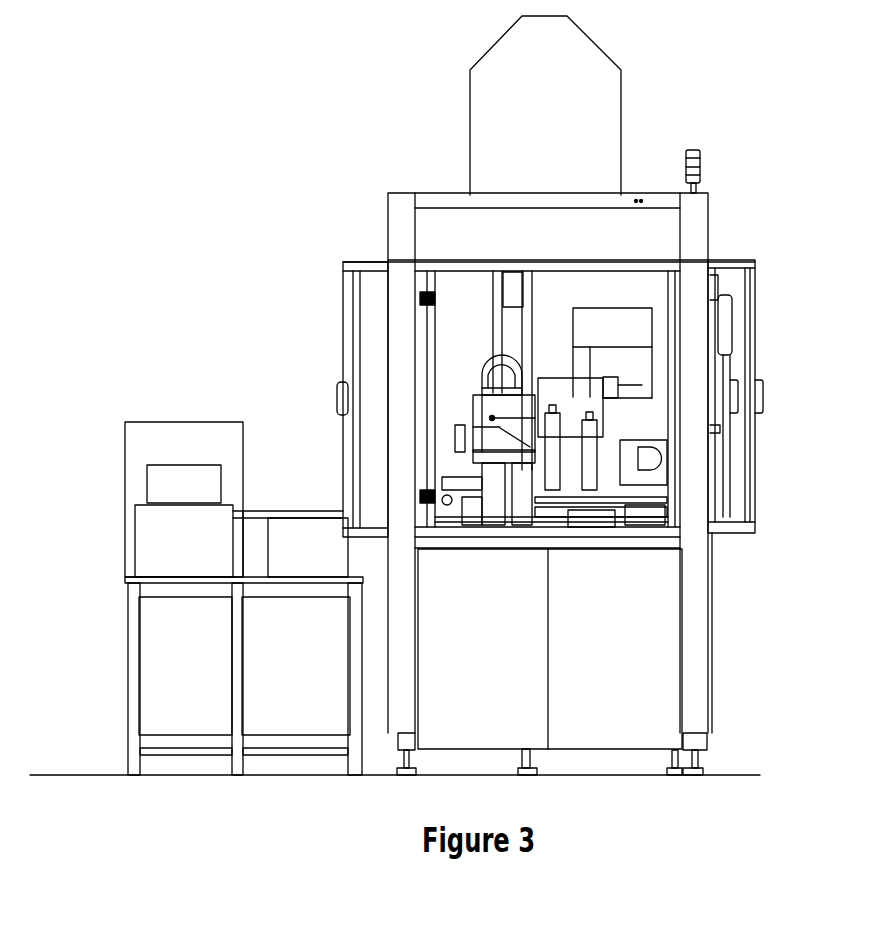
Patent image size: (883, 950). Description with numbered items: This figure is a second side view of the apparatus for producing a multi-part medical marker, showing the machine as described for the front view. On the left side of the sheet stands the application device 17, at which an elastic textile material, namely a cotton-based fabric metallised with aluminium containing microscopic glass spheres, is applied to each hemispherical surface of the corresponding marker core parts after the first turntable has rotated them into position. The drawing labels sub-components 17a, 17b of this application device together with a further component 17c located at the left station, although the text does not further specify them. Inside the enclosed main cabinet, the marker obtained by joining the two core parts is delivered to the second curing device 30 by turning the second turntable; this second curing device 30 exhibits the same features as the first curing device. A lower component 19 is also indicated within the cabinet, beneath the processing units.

The application device 17 is at (163, 356).
The conveyor 17a is at (296, 460).
The conveyor 17b is at (313, 515).
The container 17c is at (185, 545).
The machine base table 19 is at (606, 497).
The second curing device 30 is at (618, 465).